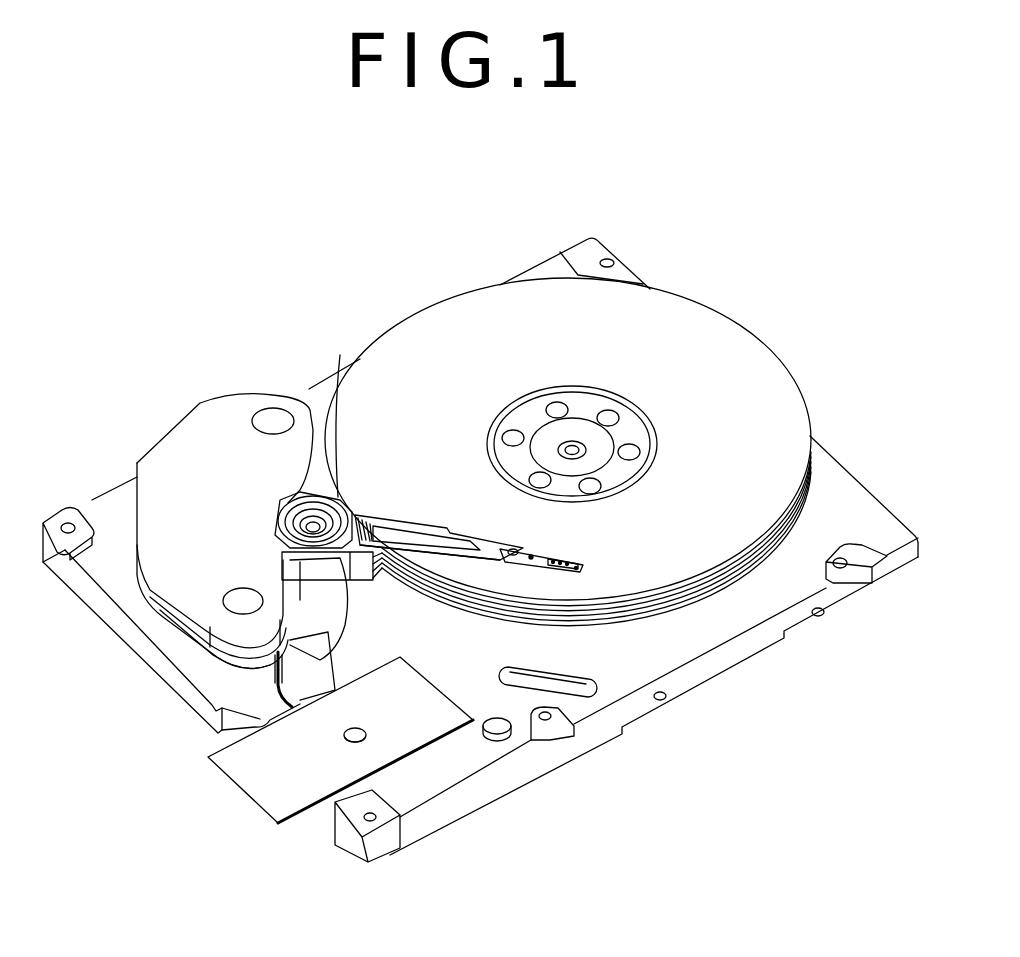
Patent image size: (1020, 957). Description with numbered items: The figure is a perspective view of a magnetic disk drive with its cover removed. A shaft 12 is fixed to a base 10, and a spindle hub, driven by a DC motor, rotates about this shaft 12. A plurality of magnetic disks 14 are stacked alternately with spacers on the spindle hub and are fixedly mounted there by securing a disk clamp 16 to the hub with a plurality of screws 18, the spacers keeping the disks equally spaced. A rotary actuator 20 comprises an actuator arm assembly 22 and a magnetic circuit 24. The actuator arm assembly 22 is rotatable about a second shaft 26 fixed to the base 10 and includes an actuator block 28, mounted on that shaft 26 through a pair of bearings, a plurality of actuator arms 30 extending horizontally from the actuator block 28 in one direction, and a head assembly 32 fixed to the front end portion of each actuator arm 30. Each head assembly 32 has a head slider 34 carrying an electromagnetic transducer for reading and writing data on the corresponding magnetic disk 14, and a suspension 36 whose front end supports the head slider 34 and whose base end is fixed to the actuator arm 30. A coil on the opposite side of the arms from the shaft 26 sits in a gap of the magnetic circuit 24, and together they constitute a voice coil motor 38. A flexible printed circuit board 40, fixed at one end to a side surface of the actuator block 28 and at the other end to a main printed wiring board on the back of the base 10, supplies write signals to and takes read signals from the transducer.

The base 10 is at (656, 665).
The shaft 12 is at (572, 430).
The magnetic disk 14 is at (470, 300).
The disk clamp 16 is at (540, 410).
The screws 18 is at (512, 437).
The rotary actuator 20 is at (322, 490).
The actuator arm assembly 22 is at (392, 515).
The magnetic circuit 24 is at (165, 588).
The shaft 26 is at (302, 525).
The actuator block 28 is at (352, 548).
The actuator arm 30 is at (415, 523).
The head assembly 32 is at (560, 550).
The head slider 34 is at (583, 572).
The suspension 36 is at (532, 553).
The voice coil motor 38 is at (183, 425).
The flexible printed circuit board 40 is at (335, 635).